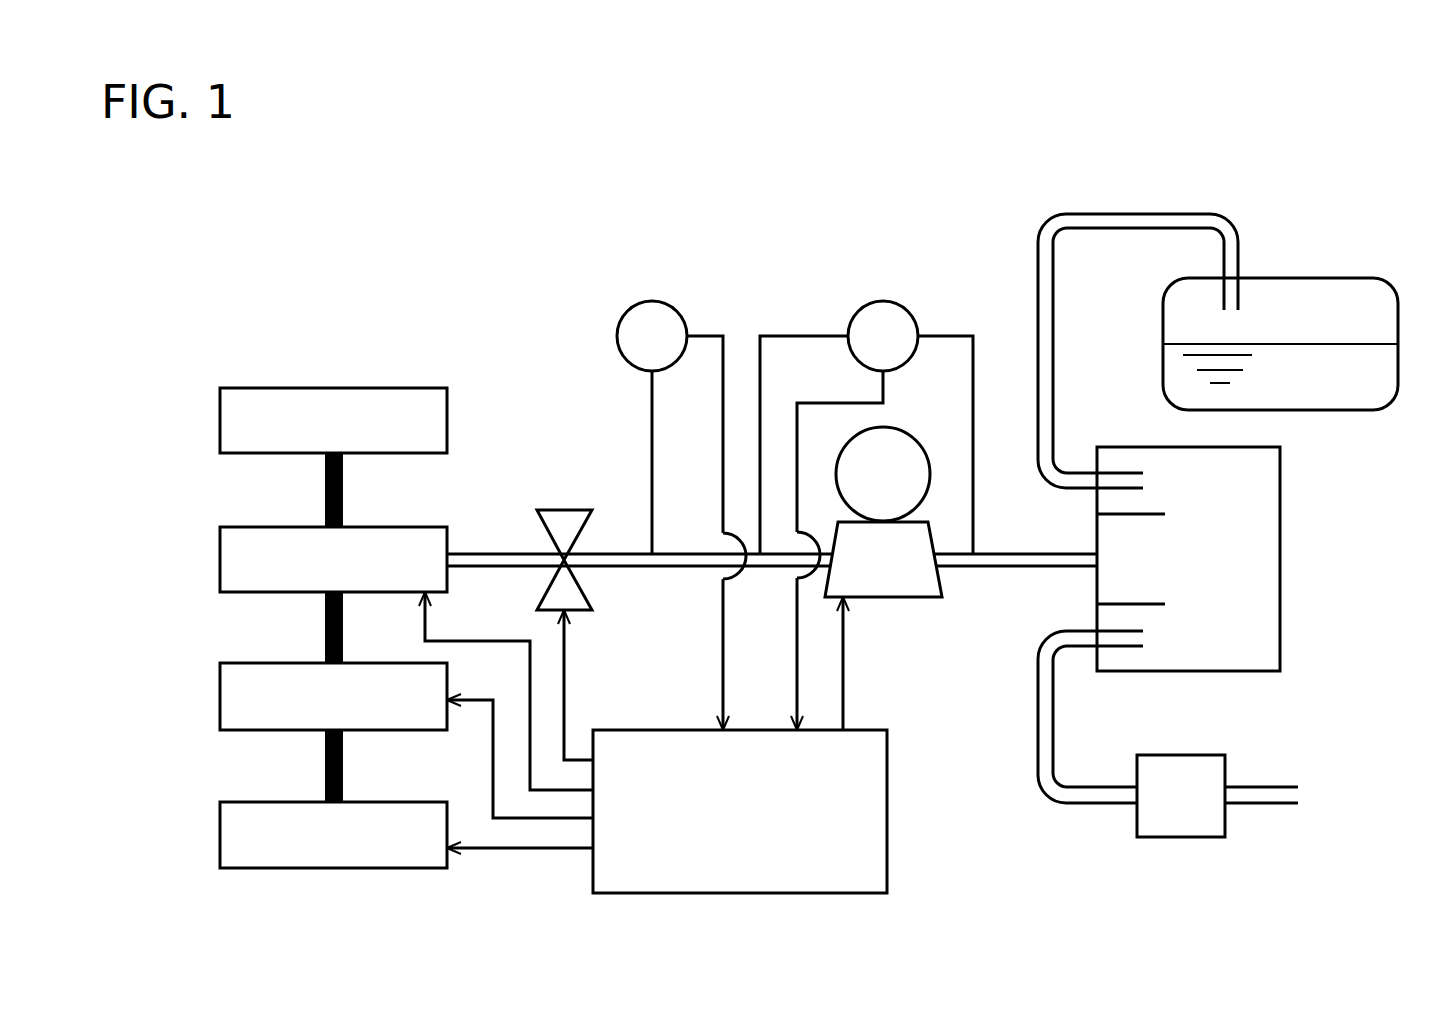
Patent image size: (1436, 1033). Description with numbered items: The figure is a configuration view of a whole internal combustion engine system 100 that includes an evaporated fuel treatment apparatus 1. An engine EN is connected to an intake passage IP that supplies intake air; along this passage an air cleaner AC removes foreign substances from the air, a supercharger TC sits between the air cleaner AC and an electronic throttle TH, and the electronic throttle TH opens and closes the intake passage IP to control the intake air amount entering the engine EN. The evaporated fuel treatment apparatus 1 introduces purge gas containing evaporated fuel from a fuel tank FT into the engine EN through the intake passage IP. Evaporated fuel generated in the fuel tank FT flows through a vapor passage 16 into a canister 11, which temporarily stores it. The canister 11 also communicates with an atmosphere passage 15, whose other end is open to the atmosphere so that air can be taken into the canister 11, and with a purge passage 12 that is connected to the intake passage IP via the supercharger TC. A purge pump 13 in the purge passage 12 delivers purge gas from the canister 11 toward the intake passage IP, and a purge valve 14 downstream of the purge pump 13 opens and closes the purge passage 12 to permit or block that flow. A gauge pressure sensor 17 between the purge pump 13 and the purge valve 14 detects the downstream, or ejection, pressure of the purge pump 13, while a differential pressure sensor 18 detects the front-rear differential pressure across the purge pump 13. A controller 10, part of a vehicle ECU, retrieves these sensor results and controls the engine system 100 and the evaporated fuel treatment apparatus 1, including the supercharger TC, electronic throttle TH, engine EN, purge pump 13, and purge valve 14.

The internal combustion engine system 100 is at (382, 247).
The evaporated fuel treatment apparatus 1 is at (895, 215).
The controller 10 is at (887, 843).
The canister 11 is at (1280, 536).
The purge passage 12 is at (690, 568).
The purge pump 13 is at (880, 590).
The purge valve 14 is at (560, 518).
The atmosphere passage 15 is at (1098, 804).
The vapor passage 16 is at (1153, 212).
The gauge pressure sensor 17 is at (673, 312).
The differential pressure sensor 18 is at (906, 313).
The fuel tank FT is at (1308, 278).
The air cleaner AC is at (220, 415).
The supercharger TC is at (220, 557).
The intake passage IP is at (325, 624).
The electronic throttle TH is at (220, 700).
The engine EN is at (220, 835).